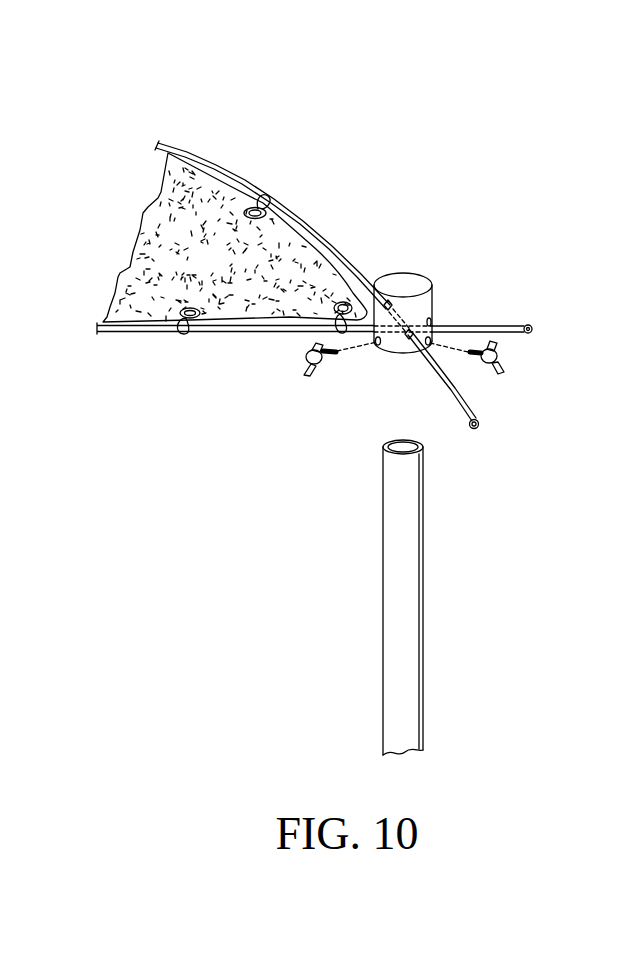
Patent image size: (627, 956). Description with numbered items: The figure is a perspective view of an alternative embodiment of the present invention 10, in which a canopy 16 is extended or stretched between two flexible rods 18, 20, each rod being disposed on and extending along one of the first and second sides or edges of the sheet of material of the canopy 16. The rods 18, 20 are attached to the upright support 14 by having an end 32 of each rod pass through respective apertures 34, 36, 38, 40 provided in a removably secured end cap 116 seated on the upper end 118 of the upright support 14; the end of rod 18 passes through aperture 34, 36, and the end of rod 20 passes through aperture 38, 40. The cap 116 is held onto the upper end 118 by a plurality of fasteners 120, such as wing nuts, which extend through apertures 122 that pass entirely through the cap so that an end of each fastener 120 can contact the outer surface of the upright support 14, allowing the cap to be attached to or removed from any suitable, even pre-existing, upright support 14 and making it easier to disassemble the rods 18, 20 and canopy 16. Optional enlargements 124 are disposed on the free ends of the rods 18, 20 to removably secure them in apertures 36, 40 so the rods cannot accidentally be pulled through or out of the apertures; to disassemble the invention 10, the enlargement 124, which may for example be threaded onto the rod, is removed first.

The present invention 10 is at (277, 111).
The upright support 14 is at (402, 578).
The canopy 16 is at (199, 268).
The rod 18 is at (207, 160).
The rod 20 is at (139, 328).
The end of rod 32 is at (534, 330).
The aperture 34 is at (392, 297).
The aperture 36 is at (407, 346).
The aperture 38 is at (378, 346).
The aperture 40 is at (433, 314).
The end cap 116 is at (417, 283).
The upper end of upright support 118 is at (400, 472).
The fastener 120 is at (305, 357).
The aperture 122 is at (373, 348).
The enlargement 124 is at (530, 324).